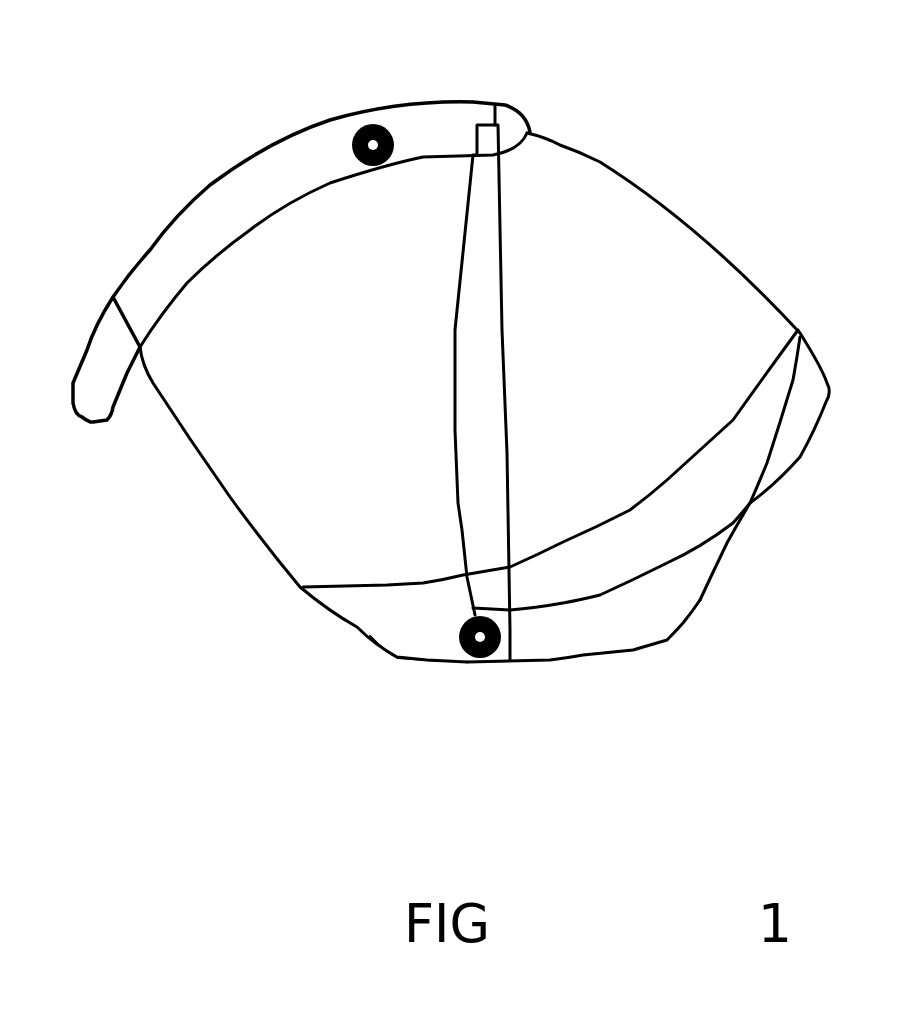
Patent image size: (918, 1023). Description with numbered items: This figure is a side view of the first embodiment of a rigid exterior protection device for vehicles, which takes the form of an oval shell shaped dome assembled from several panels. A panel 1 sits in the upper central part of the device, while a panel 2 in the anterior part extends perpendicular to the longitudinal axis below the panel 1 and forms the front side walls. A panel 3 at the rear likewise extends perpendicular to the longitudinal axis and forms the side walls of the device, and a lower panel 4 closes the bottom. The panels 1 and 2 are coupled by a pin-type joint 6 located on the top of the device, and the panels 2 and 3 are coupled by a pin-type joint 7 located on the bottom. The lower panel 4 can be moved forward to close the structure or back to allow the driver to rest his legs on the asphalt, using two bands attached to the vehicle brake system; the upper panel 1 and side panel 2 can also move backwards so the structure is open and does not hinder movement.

The panel 1 is at (240, 202).
The panel 2 is at (257, 452).
The panel 3 is at (607, 285).
The lower panel 4 is at (685, 523).
The pin-type joint 6 is at (395, 122).
The pin-type joint 7 is at (467, 660).